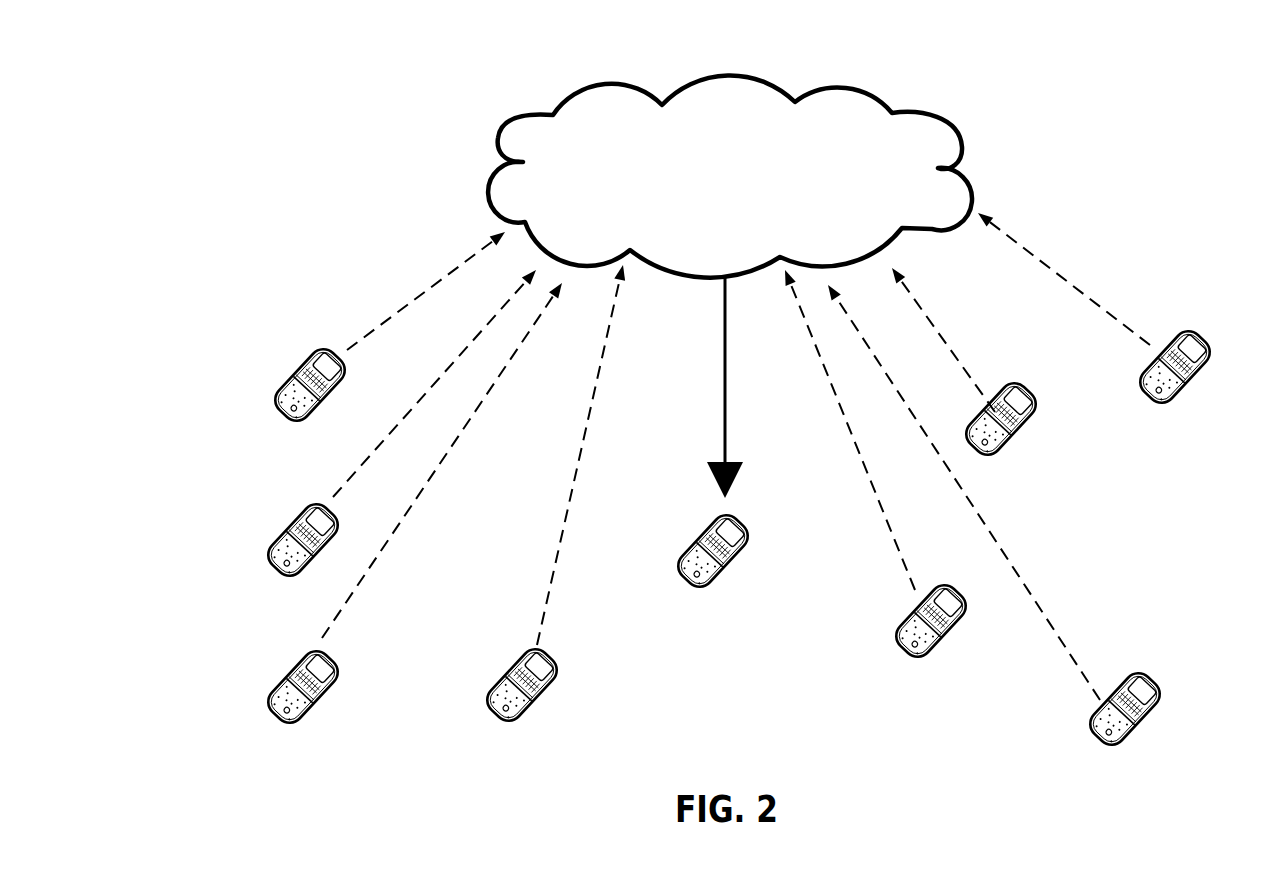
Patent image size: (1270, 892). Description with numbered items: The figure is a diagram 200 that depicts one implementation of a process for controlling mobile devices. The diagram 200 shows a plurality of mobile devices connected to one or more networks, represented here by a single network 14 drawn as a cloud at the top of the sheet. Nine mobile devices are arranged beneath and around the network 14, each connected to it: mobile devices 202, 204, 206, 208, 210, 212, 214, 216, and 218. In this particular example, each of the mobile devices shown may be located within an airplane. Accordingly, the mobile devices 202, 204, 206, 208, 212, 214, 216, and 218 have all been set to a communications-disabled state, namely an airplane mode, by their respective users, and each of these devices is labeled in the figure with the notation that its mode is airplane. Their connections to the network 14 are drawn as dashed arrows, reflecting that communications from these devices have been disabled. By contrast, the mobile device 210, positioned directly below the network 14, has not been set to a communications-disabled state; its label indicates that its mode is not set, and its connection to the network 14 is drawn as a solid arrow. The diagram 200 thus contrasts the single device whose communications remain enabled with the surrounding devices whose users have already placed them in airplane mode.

The diagram 200 is at (241, 171).
The network 14 is at (730, 176).
The mobile device 202 is at (278, 406).
The mobile device 204 is at (274, 562).
The mobile device 206 is at (274, 710).
The mobile device 208 is at (494, 708).
The mobile device 210 is at (680, 574).
The mobile device 212 is at (903, 645).
The mobile device 214 is at (1092, 733).
The mobile device 216 is at (1017, 380).
The mobile device 218 is at (1140, 393).